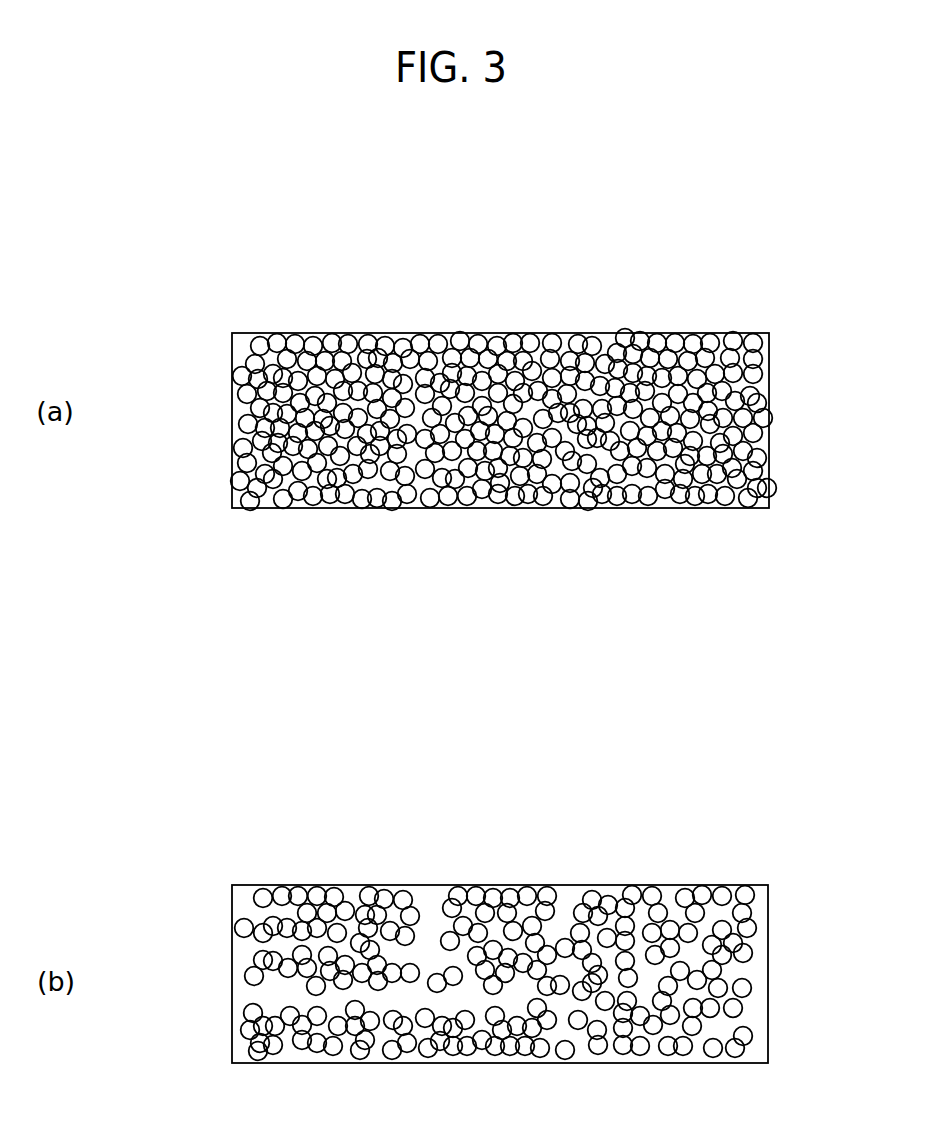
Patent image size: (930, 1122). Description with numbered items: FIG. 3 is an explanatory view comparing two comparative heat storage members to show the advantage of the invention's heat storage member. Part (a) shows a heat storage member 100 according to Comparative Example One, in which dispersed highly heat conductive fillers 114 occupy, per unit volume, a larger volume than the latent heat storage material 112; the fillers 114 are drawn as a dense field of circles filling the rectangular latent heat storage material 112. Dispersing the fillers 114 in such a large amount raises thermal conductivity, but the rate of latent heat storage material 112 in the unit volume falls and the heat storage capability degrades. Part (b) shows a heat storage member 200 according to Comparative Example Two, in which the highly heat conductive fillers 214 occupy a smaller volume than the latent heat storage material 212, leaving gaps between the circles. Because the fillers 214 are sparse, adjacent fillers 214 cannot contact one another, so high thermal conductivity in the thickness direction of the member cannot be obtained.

The heat storage member 100 is at (474, 378).
The latent heat storage material 112 is at (242, 357).
The highly heat conductive fillers 114 is at (522, 385).
The heat storage member 200 is at (547, 934).
The latent heat storage material 212 is at (757, 972).
The highly heat conductive fillers 214 is at (576, 912).